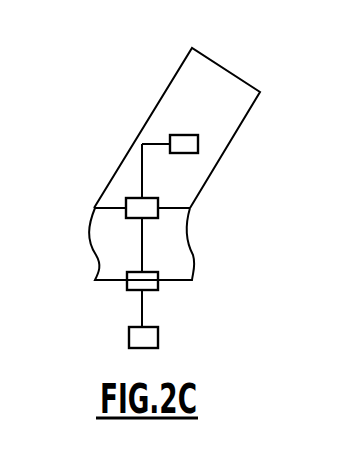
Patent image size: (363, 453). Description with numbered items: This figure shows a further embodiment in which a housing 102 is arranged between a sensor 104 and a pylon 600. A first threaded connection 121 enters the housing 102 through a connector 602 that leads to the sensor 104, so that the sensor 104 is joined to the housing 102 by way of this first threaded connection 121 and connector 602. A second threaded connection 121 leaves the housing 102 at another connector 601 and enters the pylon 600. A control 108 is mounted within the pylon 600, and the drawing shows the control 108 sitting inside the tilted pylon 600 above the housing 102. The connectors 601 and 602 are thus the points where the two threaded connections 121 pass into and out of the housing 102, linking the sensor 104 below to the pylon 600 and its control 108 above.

The pylon 600 is at (192, 75).
The control 108 is at (182, 135).
The connector 601 is at (141, 198).
The threaded connection 121 is at (126, 201).
The housing 102 is at (101, 261).
The connector 602 is at (145, 290).
The sensor 104 is at (129, 335).